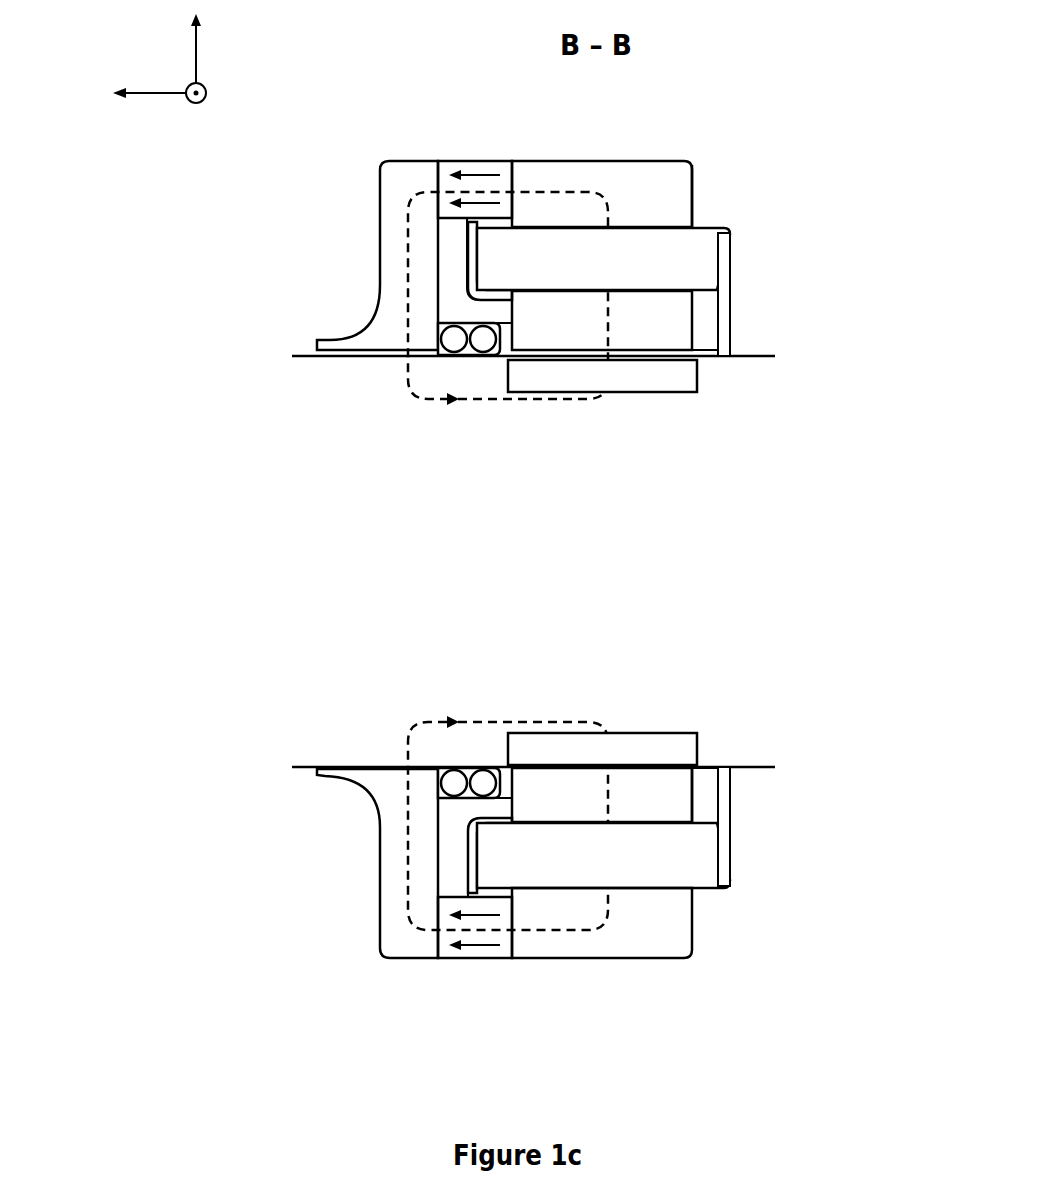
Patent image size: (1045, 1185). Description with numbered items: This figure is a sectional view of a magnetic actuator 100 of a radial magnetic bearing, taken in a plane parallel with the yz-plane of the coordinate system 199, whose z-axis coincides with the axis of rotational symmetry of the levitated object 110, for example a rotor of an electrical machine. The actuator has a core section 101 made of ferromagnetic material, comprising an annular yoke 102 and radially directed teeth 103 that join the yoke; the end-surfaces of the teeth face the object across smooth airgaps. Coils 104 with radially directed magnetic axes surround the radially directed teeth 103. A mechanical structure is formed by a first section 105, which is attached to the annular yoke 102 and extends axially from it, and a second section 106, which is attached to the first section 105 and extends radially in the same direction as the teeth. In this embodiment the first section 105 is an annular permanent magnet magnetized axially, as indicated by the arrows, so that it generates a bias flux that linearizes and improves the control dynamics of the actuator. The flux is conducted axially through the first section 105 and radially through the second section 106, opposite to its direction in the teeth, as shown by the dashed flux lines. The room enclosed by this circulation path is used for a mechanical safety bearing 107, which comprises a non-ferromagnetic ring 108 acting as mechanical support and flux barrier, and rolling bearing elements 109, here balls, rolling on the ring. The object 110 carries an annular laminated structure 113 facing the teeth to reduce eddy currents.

The magnetic actuator 100 is at (295, 845).
The core section 101 is at (613, 161).
The annular yoke 102 is at (693, 175).
The radially directed teeth 103 is at (693, 317).
The coils 104 is at (721, 228).
The first section 105 is at (480, 161).
The second section 106 is at (414, 161).
The mechanical safety bearing 107 is at (453, 312).
The non-ferromagnetic ring 108 is at (457, 272).
The rolling bearing elements 109 is at (453, 353).
The object 110 is at (449, 578).
The annular laminated structure 113 is at (698, 375).
The coordinate system 199 is at (176, 65).